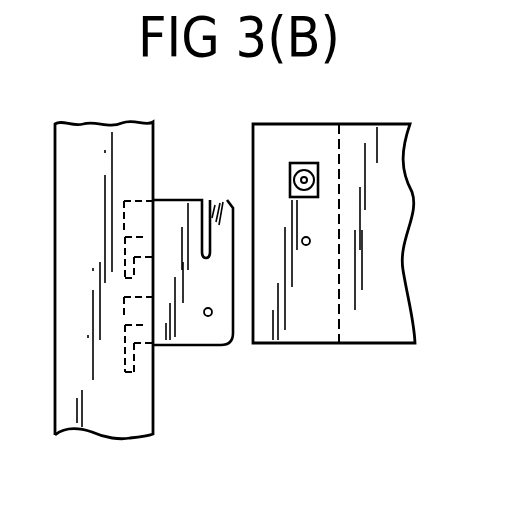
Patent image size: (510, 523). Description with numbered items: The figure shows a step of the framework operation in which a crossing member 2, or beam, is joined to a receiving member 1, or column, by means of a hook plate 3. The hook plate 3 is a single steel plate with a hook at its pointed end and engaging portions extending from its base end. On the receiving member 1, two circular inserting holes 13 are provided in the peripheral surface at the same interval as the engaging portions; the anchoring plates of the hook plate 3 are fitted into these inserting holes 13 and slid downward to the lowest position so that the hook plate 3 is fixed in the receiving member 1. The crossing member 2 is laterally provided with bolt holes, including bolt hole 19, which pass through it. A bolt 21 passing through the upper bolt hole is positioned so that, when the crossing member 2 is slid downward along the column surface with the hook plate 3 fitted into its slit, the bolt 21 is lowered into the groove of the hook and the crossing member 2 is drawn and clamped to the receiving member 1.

The receiving member 1 is at (88, 137).
The crossing member 2 is at (358, 123).
The hook plate 3 is at (172, 200).
The inserting holes 13 is at (126, 218).
The bolt hole 19 is at (307, 246).
The bolt 21 is at (318, 180).